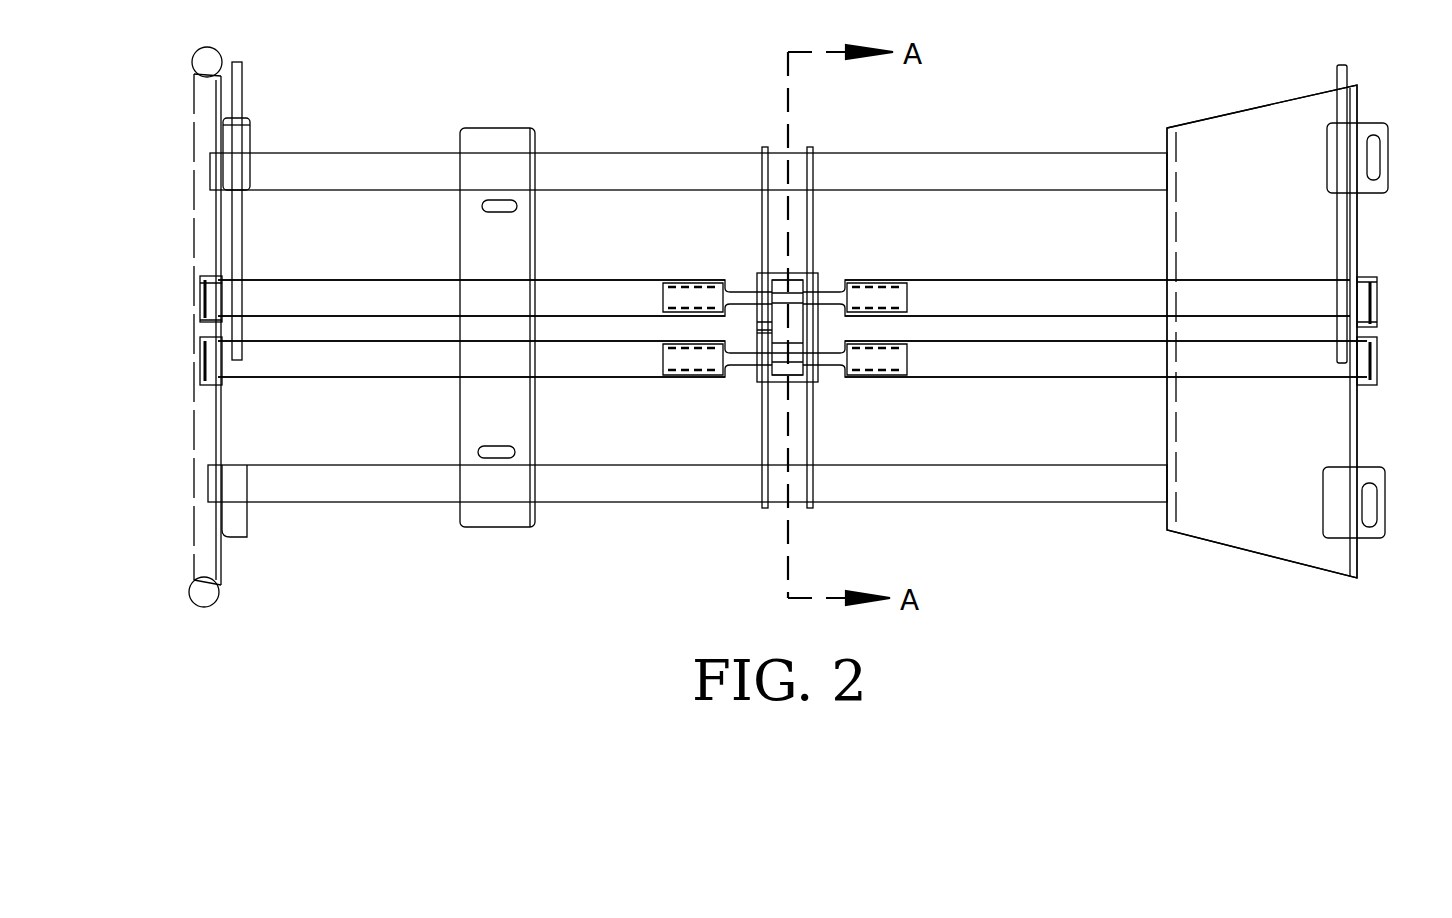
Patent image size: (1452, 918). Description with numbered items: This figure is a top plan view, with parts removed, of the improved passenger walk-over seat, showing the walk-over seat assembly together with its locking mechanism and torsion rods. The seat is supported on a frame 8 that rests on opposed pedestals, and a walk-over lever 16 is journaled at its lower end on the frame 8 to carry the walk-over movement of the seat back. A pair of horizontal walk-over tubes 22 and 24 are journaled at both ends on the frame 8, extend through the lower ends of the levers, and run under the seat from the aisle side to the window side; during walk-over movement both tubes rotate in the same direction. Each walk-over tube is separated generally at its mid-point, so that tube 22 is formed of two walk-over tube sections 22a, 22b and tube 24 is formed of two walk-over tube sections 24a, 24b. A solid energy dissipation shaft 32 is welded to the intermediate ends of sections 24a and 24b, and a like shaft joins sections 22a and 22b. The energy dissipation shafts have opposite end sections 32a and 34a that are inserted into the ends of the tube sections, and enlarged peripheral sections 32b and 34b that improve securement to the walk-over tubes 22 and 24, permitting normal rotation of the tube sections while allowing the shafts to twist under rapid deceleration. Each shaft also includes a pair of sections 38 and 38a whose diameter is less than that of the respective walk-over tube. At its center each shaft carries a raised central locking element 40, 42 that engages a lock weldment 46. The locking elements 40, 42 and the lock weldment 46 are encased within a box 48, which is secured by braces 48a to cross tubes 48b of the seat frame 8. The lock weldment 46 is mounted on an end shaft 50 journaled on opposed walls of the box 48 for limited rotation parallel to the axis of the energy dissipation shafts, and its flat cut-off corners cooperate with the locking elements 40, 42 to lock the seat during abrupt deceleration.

The frame 8 is at (1358, 262).
The lever 16 is at (236, 250).
The walk-over tube 22 is at (1038, 390).
The walk-over tube section 22a is at (1052, 363).
The walk-over tube section 22b is at (292, 363).
The walk-over tube 24 is at (1066, 272).
The walk-over tube section 24a is at (1092, 293).
The walk-over tube section 24b is at (382, 293).
The energy dissipation shaft 32 is at (750, 262).
The end section 32a is at (673, 365).
The enlarged peripheral section 32b is at (717, 372).
The end section 34a is at (683, 297).
The enlarged peripheral section 34b is at (724, 283).
The section 38 is at (195, 327).
The section 38a is at (757, 323).
The central locking element 40 is at (812, 386).
The central locking element 42 is at (808, 270).
The lock weldment 46 is at (820, 328).
The box 48 is at (1045, 485).
The brace 48a is at (758, 440).
The cross tube 48b is at (1100, 153).
The end shaft 50 is at (757, 330).